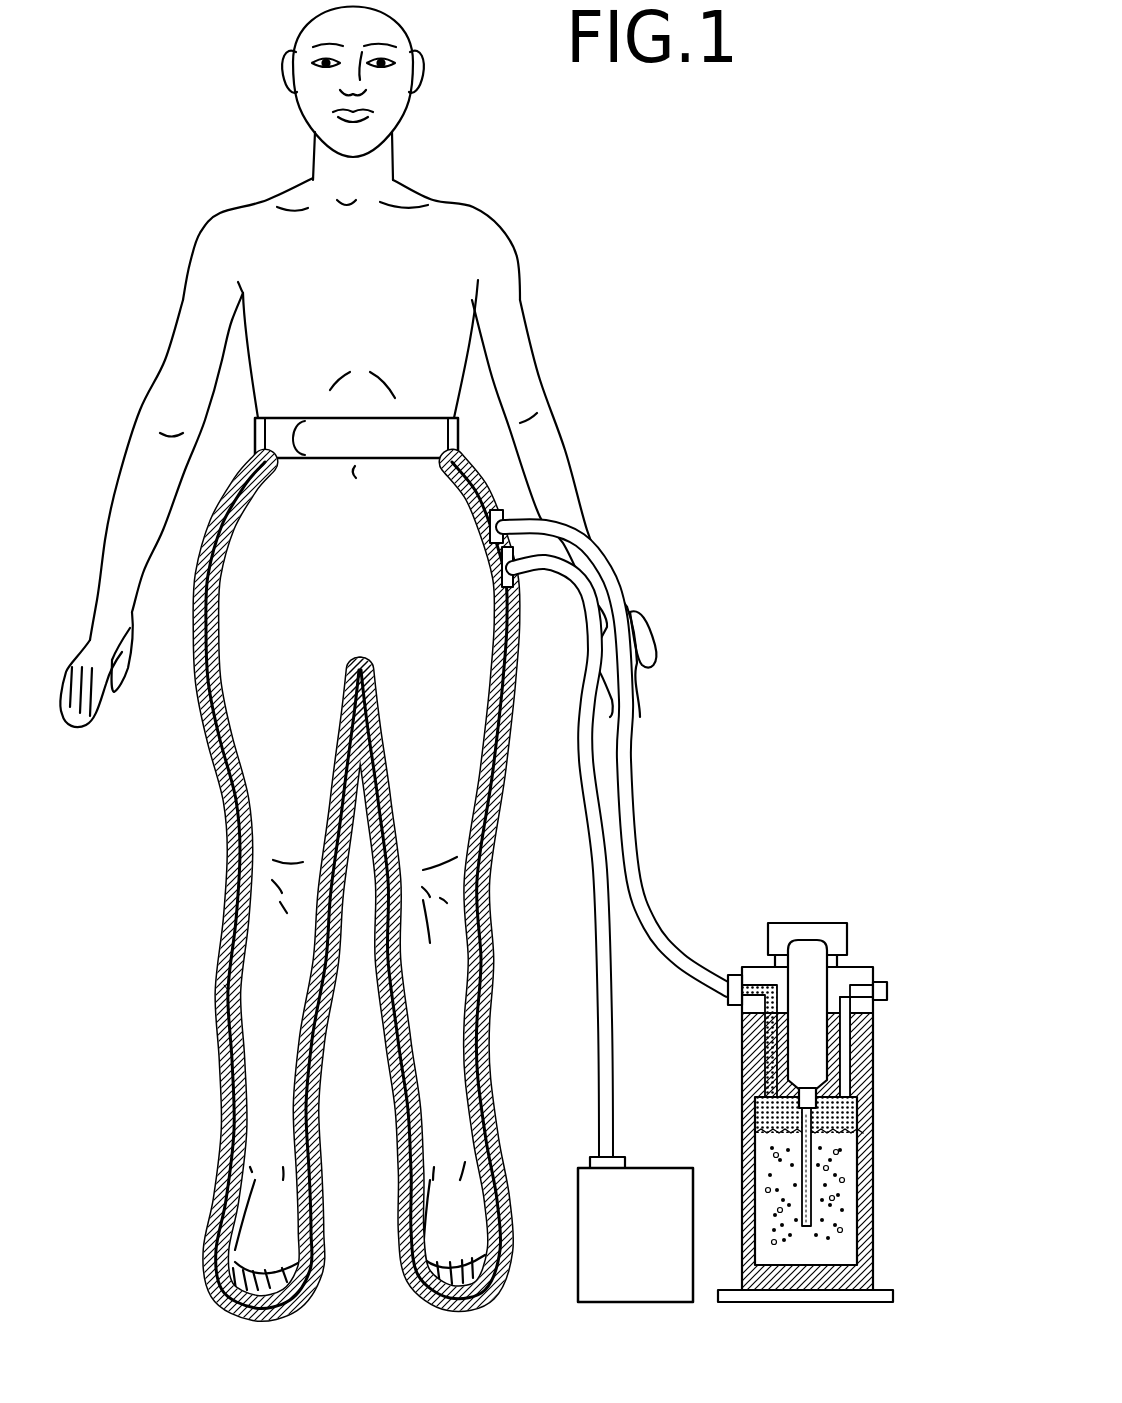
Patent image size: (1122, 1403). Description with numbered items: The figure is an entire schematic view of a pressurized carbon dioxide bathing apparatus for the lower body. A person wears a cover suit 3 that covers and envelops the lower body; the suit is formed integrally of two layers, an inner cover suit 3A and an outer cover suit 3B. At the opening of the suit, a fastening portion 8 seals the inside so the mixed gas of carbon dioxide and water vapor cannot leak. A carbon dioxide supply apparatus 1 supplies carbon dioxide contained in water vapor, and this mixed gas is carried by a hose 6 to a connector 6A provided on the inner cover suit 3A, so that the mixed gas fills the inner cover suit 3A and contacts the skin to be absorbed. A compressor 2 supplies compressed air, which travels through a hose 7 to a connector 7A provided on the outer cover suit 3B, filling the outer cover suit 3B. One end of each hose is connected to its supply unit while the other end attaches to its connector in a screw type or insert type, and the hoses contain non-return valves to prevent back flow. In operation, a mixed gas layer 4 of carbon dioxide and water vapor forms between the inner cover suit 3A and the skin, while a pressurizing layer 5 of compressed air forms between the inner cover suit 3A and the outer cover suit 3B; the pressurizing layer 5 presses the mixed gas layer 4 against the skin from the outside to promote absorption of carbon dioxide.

The carbon dioxide supply apparatus 1 is at (838, 923).
The compressor 2 is at (652, 1168).
The cover suit 3 is at (306, 851).
The inner cover suit 3A is at (210, 728).
The outer cover suit 3B is at (222, 820).
The mixed gas layer 4 is at (236, 902).
The pressurizing layer 5 is at (225, 986).
The hose 6 is at (637, 789).
The connector 6A is at (503, 516).
The hose 7 is at (607, 866).
The connector 7A is at (513, 560).
The fastening portion 8 is at (458, 433).